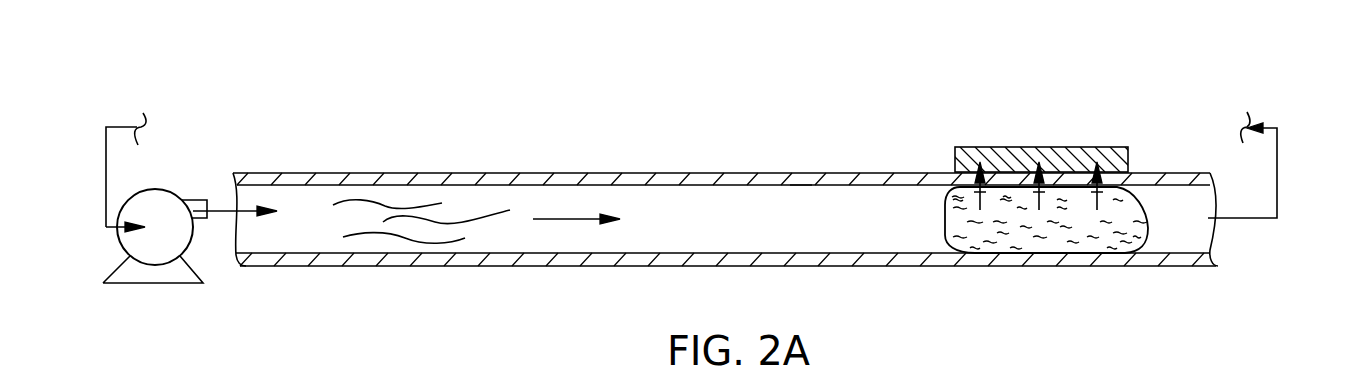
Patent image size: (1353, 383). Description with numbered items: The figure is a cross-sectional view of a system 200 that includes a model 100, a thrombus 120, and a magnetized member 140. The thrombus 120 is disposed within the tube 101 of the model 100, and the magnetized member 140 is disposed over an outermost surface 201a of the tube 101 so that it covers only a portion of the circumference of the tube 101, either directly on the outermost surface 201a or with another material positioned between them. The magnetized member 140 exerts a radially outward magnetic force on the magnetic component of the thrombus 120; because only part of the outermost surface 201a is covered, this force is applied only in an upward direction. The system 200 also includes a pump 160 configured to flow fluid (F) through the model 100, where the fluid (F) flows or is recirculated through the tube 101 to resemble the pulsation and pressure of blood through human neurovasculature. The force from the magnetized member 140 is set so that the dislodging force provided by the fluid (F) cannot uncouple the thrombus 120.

The model 100 is at (725, 198).
The tube 101 is at (633, 173).
The outermost surface 201a is at (798, 177).
The thrombus 120 is at (945, 232).
The magnetized member 140 is at (1033, 157).
The pump 160 is at (167, 187).
The system 200 is at (1285, 110).
The fluid F is at (500, 213).